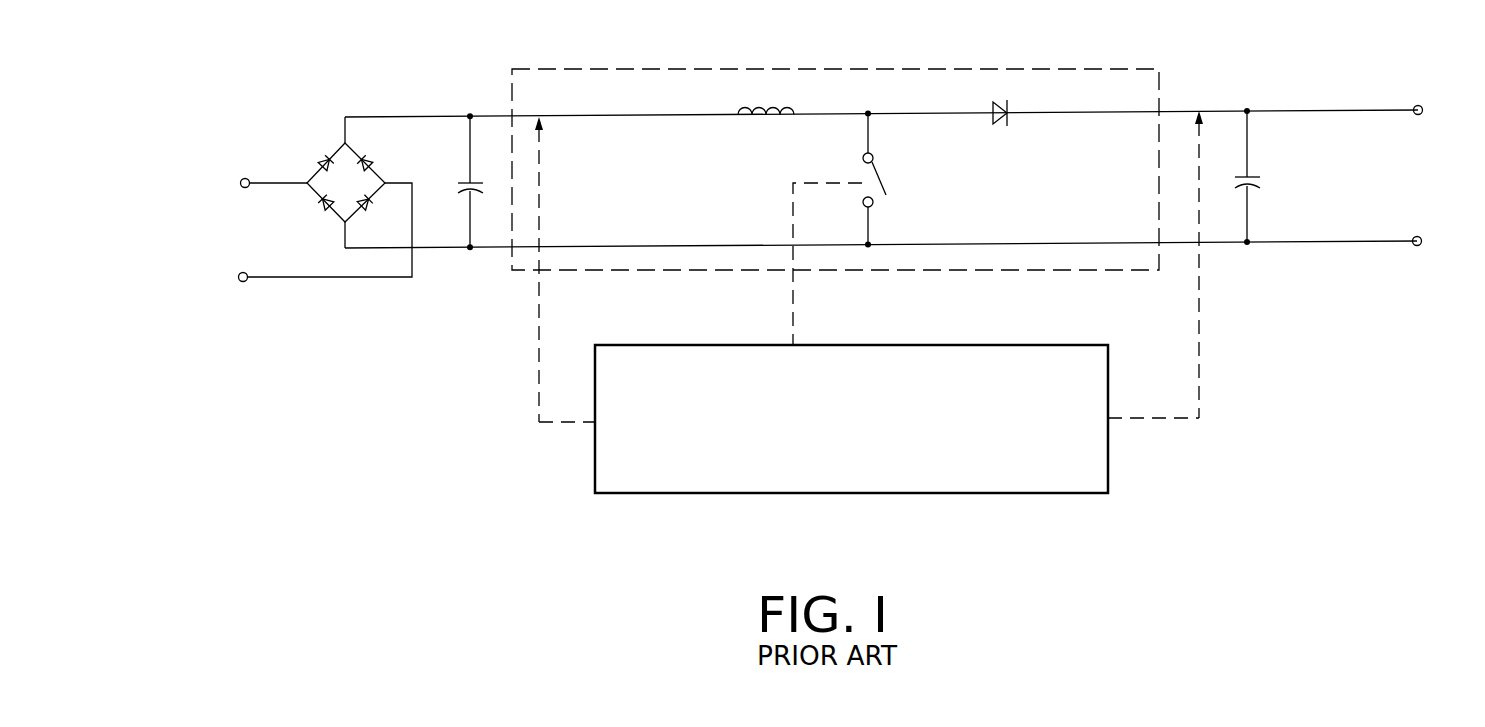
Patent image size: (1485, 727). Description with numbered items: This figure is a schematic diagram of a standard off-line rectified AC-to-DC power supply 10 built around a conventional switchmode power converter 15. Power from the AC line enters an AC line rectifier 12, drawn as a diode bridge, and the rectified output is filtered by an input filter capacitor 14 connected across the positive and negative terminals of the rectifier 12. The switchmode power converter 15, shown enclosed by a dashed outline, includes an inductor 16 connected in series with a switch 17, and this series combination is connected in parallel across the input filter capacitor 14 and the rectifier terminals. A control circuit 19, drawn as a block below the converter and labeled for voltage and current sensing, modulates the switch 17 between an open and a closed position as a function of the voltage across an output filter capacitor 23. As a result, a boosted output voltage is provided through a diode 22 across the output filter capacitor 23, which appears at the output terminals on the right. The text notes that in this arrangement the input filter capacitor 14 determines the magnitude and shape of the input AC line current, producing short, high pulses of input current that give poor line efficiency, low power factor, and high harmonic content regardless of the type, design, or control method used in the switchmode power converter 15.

The off-line rectified AC-to-DC power supply 10 is at (428, 436).
The AC line rectifier 12 is at (304, 136).
The input filter capacitor 14 is at (480, 173).
The switchmode power converter 15 is at (633, 70).
The inductor 16 is at (755, 122).
The switch 17 is at (881, 180).
The control circuit 19 is at (937, 344).
The diode 22 is at (993, 103).
The output filter capacitor 23 is at (1262, 163).